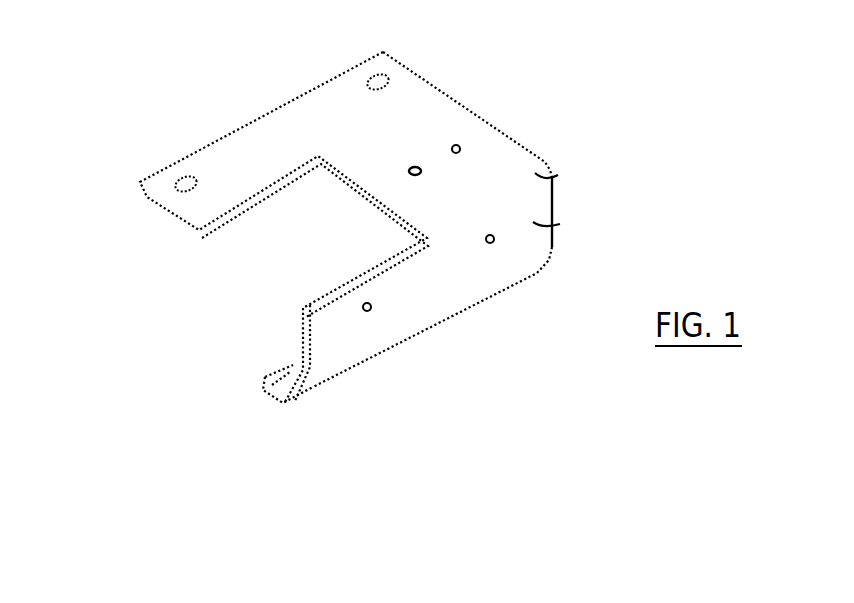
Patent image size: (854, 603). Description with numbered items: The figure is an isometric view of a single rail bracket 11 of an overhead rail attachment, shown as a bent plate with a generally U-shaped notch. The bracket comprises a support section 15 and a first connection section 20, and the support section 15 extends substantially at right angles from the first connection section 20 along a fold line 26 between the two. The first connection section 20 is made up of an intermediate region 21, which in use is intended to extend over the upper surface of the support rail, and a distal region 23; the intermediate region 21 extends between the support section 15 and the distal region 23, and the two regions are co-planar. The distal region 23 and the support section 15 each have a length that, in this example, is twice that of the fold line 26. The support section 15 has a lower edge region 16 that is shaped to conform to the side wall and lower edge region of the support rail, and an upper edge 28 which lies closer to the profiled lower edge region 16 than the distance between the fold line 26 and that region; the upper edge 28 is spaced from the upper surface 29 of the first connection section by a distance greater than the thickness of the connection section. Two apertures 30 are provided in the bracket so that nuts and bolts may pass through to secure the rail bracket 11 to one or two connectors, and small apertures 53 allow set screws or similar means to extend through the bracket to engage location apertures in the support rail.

The rail bracket 11 is at (583, 75).
The first connection section 20 is at (451, 97).
The intermediate region 21 is at (430, 128).
The distal region 23 is at (265, 138).
The apertures 30 is at (375, 80).
The upper surface 29 is at (392, 149).
The small apertures 53 is at (460, 149).
The fold line 26 is at (558, 175).
The support section 15 is at (560, 224).
The upper edge 28 is at (357, 279).
The lower edge region 16 is at (313, 387).